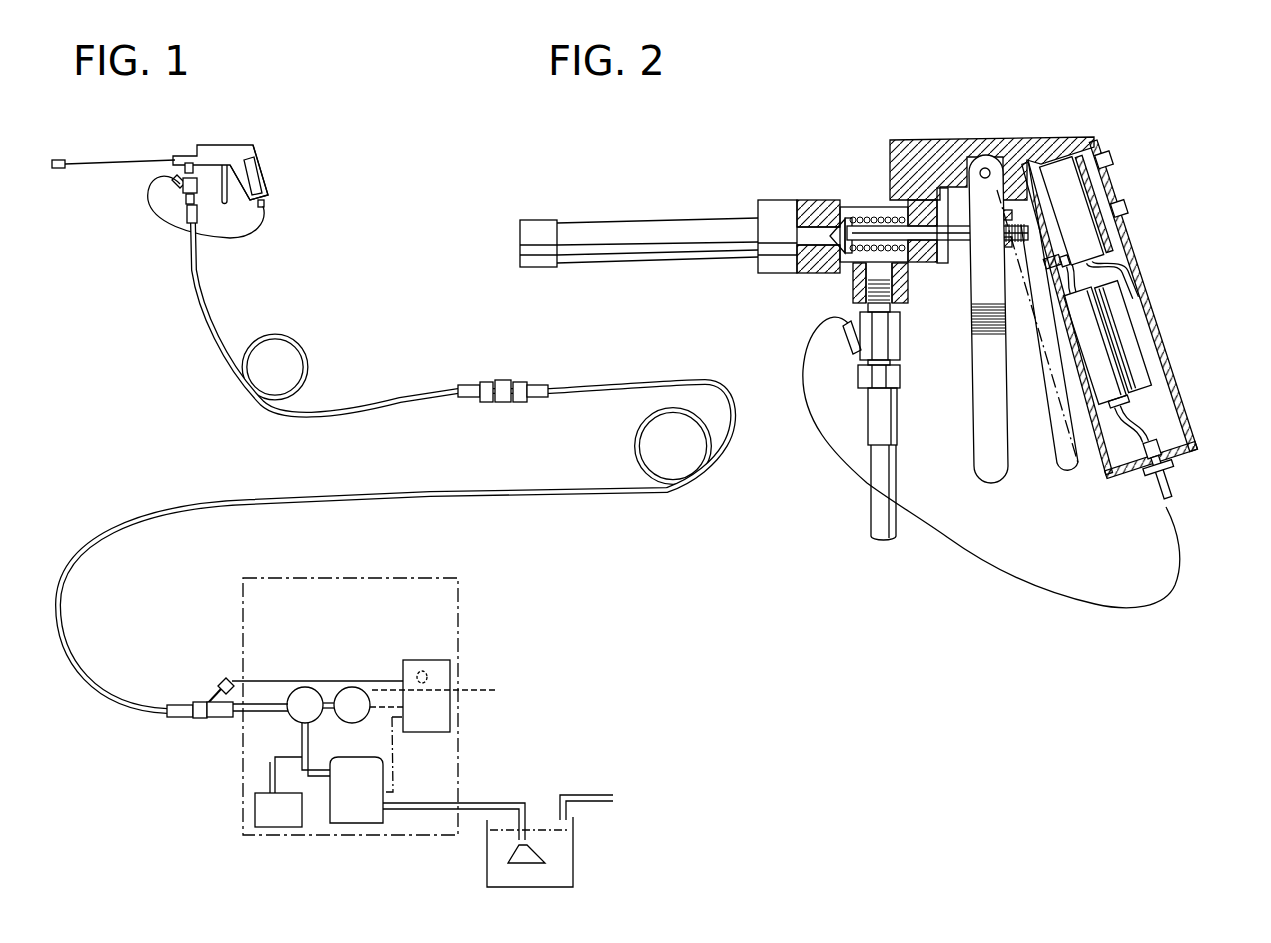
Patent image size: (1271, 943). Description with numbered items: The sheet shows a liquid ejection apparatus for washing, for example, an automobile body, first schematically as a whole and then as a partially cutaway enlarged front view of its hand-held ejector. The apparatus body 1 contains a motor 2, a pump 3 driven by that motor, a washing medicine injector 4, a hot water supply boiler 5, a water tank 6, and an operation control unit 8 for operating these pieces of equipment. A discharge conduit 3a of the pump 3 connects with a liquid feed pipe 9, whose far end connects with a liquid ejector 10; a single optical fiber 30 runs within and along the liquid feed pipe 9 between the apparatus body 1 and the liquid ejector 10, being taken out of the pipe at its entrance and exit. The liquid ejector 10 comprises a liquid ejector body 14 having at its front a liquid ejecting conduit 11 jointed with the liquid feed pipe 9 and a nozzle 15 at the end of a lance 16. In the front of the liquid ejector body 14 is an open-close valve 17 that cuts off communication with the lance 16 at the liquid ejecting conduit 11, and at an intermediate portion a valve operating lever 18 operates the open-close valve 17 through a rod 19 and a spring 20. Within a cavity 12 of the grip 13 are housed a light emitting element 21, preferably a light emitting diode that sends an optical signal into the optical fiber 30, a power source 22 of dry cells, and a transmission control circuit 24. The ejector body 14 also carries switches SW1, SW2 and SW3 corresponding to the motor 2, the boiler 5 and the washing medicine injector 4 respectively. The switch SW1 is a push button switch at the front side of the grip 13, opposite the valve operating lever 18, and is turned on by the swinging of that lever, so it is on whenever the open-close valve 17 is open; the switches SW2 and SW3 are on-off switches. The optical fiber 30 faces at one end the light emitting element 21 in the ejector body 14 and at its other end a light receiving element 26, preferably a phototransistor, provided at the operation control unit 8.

In FIG. 1, the apparatus body 1 is at (458, 604).
In FIG. 1, the motor 2 is at (424, 700).
In FIG. 1, the pump 3 is at (300, 688).
In FIG. 1, the discharge conduit 3a is at (258, 712).
In FIG. 1, the washing medicine injector 4 is at (280, 828).
In FIG. 1, the hot water supply boiler 5 is at (357, 818).
In FIG. 1, the water tank 6 is at (574, 853).
In FIG. 1, the operation control unit 8 is at (450, 721).
In FIG. 1, the liquid feed pipe 9 is at (658, 380).
In FIG. 2, the liquid feed pipe 9 is at (873, 517).
In FIG. 1, the liquid ejector 10 is at (224, 143).
In FIG. 2, the liquid ejector 10 is at (1043, 127).
In FIG. 2, the liquid ejecting conduit 11 is at (812, 233).
In FIG. 2, the cavity 12 is at (1128, 260).
In FIG. 1, the grip 13 is at (262, 180).
In FIG. 2, the grip 13 is at (1148, 283).
In FIG. 1, the liquid ejector body 14 is at (255, 150).
In FIG. 2, the liquid ejector body 14 is at (1066, 142).
In FIG. 1, the nozzle 15 is at (58, 160).
In FIG. 2, the nozzle 15 is at (535, 220).
In FIG. 1, the lance 16 is at (111, 163).
In FIG. 2, the lance 16 is at (668, 218).
In FIG. 2, the open-close valve 17 is at (845, 222).
In FIG. 1, the valve operating lever 18 is at (230, 200).
In FIG. 2, the valve operating lever 18 is at (975, 450).
In FIG. 2, the rod 19 is at (962, 252).
In FIG. 2, the spring 20 is at (873, 215).
In FIG. 2, the light emitting element 21 is at (1192, 428).
In FIG. 2, the power source 22 is at (1112, 352).
In FIG. 2, the transmission control circuit 24 is at (1097, 243).
In FIG. 1, the light receiving element 26 is at (428, 673).
In FIG. 1, the optical fiber 30 is at (263, 230).
In FIG. 2, the optical fiber 30 is at (985, 562).
In FIG. 2, the switch SW1 is at (1040, 268).
In FIG. 2, the switch SW2 is at (1113, 162).
In FIG. 2, the switch SW3 is at (1128, 203).